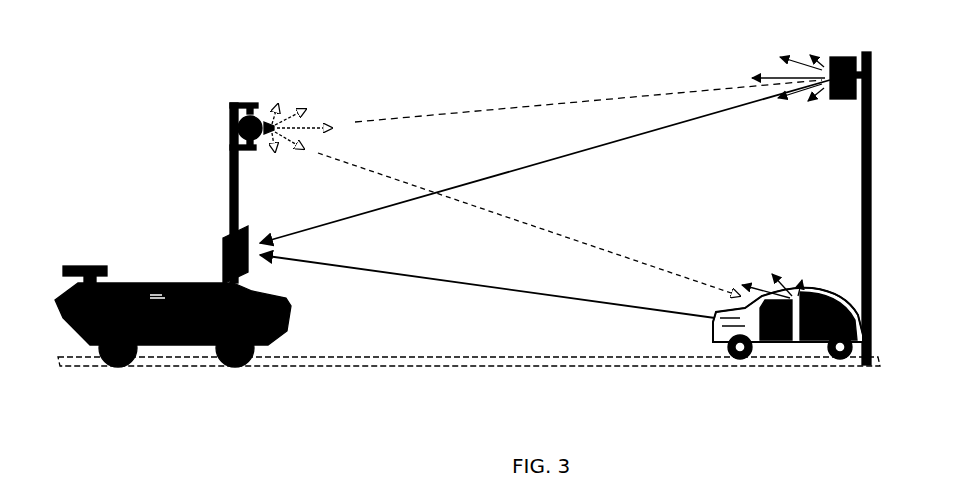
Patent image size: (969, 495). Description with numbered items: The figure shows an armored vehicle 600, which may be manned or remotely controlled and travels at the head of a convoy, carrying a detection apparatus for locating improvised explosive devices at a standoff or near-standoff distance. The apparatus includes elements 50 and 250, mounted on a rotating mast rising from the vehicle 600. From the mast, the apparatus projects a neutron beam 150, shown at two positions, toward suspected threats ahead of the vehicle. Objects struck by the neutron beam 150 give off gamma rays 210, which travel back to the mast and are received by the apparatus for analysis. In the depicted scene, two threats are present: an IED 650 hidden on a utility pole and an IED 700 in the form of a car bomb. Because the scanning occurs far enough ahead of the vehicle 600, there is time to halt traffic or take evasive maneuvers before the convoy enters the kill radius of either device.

The detection apparatus element 50 is at (236, 125).
The neutron beam 150 is at (588, 100).
The gamma rays 210 is at (545, 172).
The detection apparatus element 250 is at (226, 243).
The vehicle 600 is at (80, 323).
The IED hidden on utility pole 650 is at (841, 57).
The car bomb IED 700 is at (832, 305).